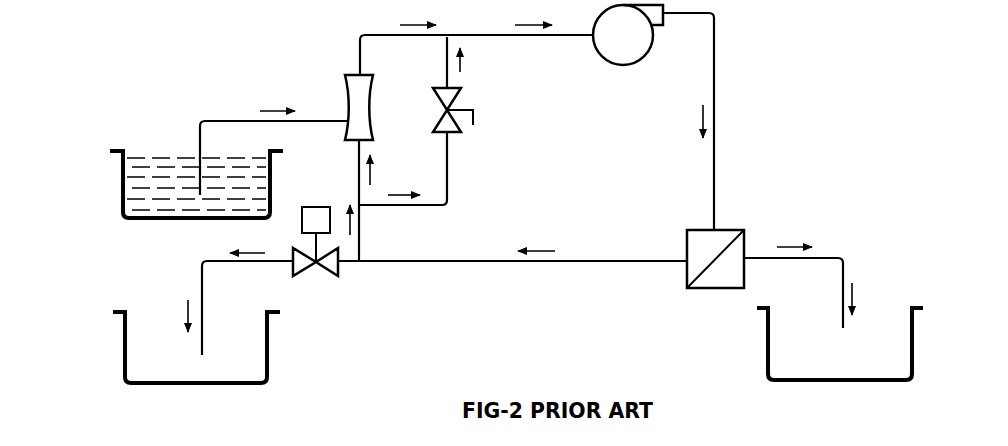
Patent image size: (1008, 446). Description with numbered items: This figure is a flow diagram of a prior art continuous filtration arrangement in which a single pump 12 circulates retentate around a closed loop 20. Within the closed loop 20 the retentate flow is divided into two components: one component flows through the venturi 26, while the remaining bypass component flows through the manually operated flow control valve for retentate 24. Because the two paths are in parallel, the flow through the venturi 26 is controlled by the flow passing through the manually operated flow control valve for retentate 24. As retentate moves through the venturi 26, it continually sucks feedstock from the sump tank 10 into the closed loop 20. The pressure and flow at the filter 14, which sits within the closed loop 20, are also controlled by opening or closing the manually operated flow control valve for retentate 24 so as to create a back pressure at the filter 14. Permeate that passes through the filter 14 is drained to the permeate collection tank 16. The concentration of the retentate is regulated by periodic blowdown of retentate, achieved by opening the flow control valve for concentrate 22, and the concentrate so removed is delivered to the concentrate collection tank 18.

The sump tank 10 is at (123, 182).
The pump 12 is at (618, 65).
The filter 14 is at (744, 233).
The permeate collection tank 16 is at (765, 333).
The concentrate collection tank 18 is at (123, 345).
The closed loop 20 is at (359, 240).
The flow control valve for concentrate 22 is at (333, 275).
The manually operated flow control valve for retentate 24 is at (461, 90).
The venturi 26 is at (345, 76).